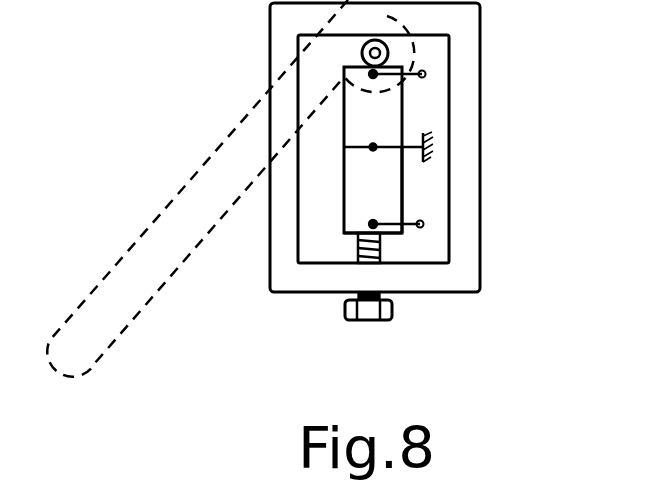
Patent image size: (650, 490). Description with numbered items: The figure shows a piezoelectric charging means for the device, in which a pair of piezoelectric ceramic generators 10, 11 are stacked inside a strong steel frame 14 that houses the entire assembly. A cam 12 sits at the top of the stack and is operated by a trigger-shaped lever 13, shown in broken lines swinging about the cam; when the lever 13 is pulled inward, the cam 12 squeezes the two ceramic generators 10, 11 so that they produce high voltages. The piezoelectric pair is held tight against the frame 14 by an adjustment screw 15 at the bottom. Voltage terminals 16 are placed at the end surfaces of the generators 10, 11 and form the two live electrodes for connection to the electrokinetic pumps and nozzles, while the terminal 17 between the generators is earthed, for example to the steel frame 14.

The piezoelectric ceramic generator 10 is at (385, 120).
The piezoelectric ceramic generator 11 is at (380, 193).
The cam 12 is at (388, 47).
The trigger-shaped lever 13 is at (162, 223).
The steel frame 14 is at (432, 285).
The adjustment screw 15 is at (350, 312).
The voltage terminals 16 is at (425, 74).
The terminal 17 is at (435, 157).